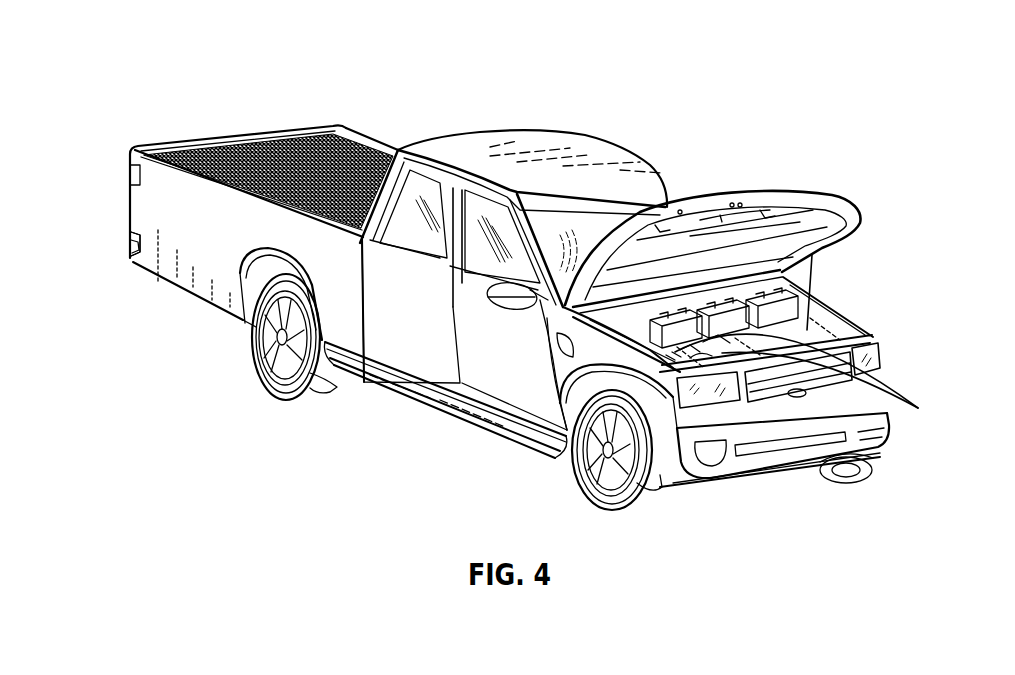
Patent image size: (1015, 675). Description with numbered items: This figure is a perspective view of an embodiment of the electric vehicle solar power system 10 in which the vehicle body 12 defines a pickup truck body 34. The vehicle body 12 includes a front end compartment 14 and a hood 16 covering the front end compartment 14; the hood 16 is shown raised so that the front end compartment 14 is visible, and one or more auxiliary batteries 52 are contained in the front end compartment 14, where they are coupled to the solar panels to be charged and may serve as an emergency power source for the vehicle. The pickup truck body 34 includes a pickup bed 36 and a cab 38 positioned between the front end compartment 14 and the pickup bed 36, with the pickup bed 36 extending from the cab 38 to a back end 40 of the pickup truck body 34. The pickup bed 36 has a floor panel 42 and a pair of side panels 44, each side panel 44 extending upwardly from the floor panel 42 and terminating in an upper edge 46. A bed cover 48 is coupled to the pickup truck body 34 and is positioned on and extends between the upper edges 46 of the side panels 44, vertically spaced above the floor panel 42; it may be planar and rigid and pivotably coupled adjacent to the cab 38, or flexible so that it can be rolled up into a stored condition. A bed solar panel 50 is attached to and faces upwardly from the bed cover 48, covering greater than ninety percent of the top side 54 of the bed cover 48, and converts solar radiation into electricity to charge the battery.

The electric vehicle solar power system 10 is at (907, 91).
The vehicle body 12 is at (607, 165).
The front end compartment 14 is at (812, 325).
The hood 16 is at (848, 220).
The pickup truck body 34 is at (518, 140).
The pickup bed 36 is at (187, 280).
The cab 38 is at (430, 360).
The back end 40 is at (127, 217).
The floor panel 42 is at (210, 303).
The side panels 44 is at (153, 252).
The upper edge 46 is at (187, 177).
The bed cover 48 is at (207, 137).
The bed solar panel 50 is at (317, 140).
The auxiliary batteries 52 is at (812, 379).
The top side 54 is at (263, 133).